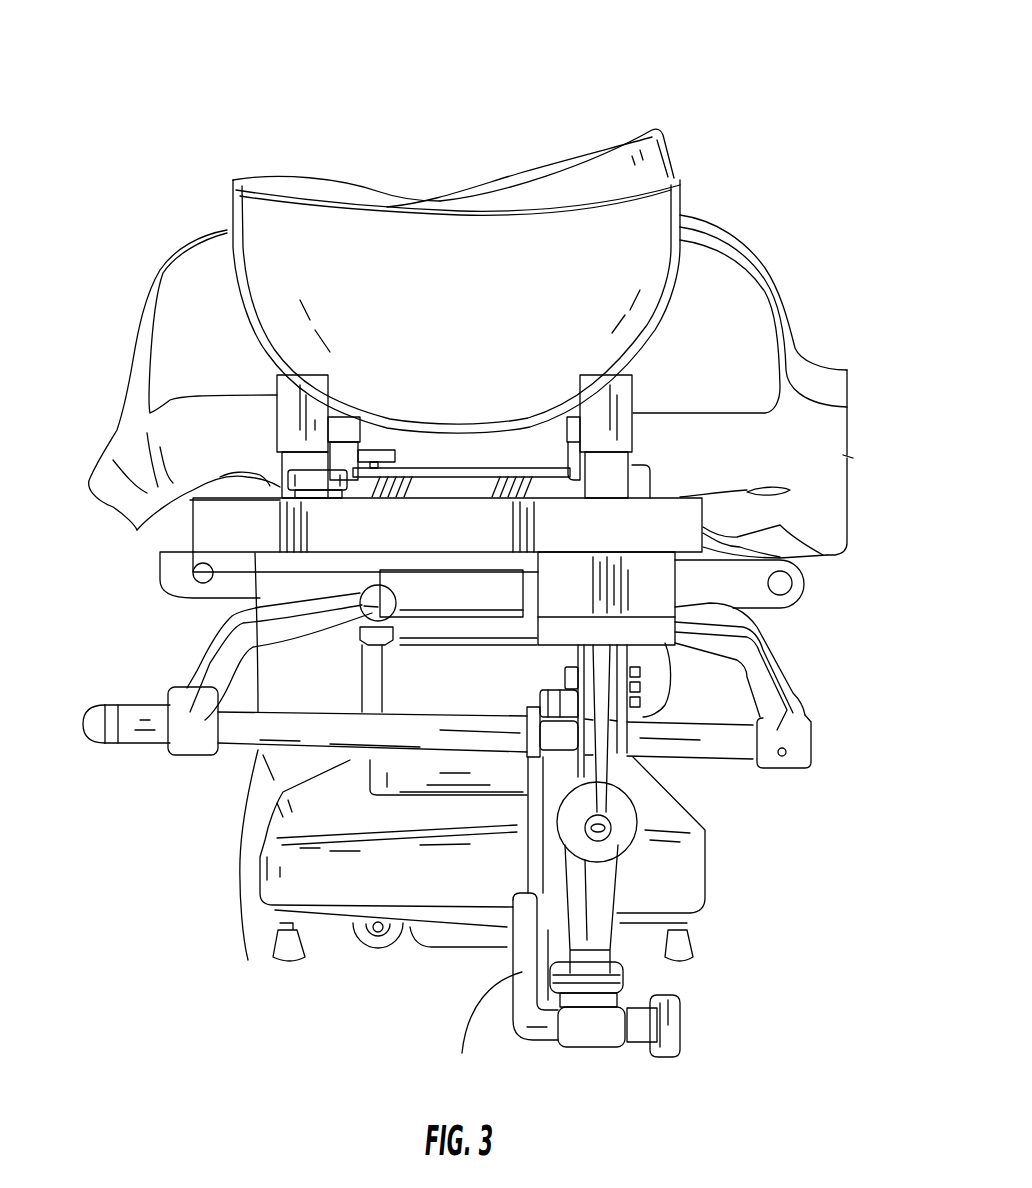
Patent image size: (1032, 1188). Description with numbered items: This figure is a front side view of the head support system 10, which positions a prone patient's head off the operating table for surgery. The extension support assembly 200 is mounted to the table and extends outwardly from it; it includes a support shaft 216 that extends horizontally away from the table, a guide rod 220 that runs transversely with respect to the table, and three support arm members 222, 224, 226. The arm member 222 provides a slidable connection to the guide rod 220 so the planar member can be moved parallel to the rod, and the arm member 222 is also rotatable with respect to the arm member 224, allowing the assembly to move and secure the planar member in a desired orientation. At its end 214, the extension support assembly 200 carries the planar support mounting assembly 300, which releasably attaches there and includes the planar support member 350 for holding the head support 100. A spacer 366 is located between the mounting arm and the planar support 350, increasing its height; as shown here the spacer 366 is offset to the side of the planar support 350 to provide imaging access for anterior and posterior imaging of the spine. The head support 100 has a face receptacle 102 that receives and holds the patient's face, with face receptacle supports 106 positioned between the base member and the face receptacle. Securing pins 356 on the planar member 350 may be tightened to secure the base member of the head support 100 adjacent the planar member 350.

The head support 100 is at (333, 97).
The head support system 10 is at (549, 122).
The face receptacle 102 is at (256, 243).
The face receptacle supports 106 is at (293, 427).
The securing members or pins 356 is at (137, 530).
The planar support member 350 is at (406, 536).
The planar support mounting assembly 300 is at (763, 521).
The spacer 366 is at (580, 610).
The support shaft 216 is at (200, 657).
The extension support assembly 200 is at (150, 775).
The support arm member 222 is at (533, 813).
The end of the extension support assembly 214 is at (652, 677).
The guide rod 220 is at (253, 776).
The support arm member 226 is at (597, 917).
The support arm member 224 is at (518, 980).